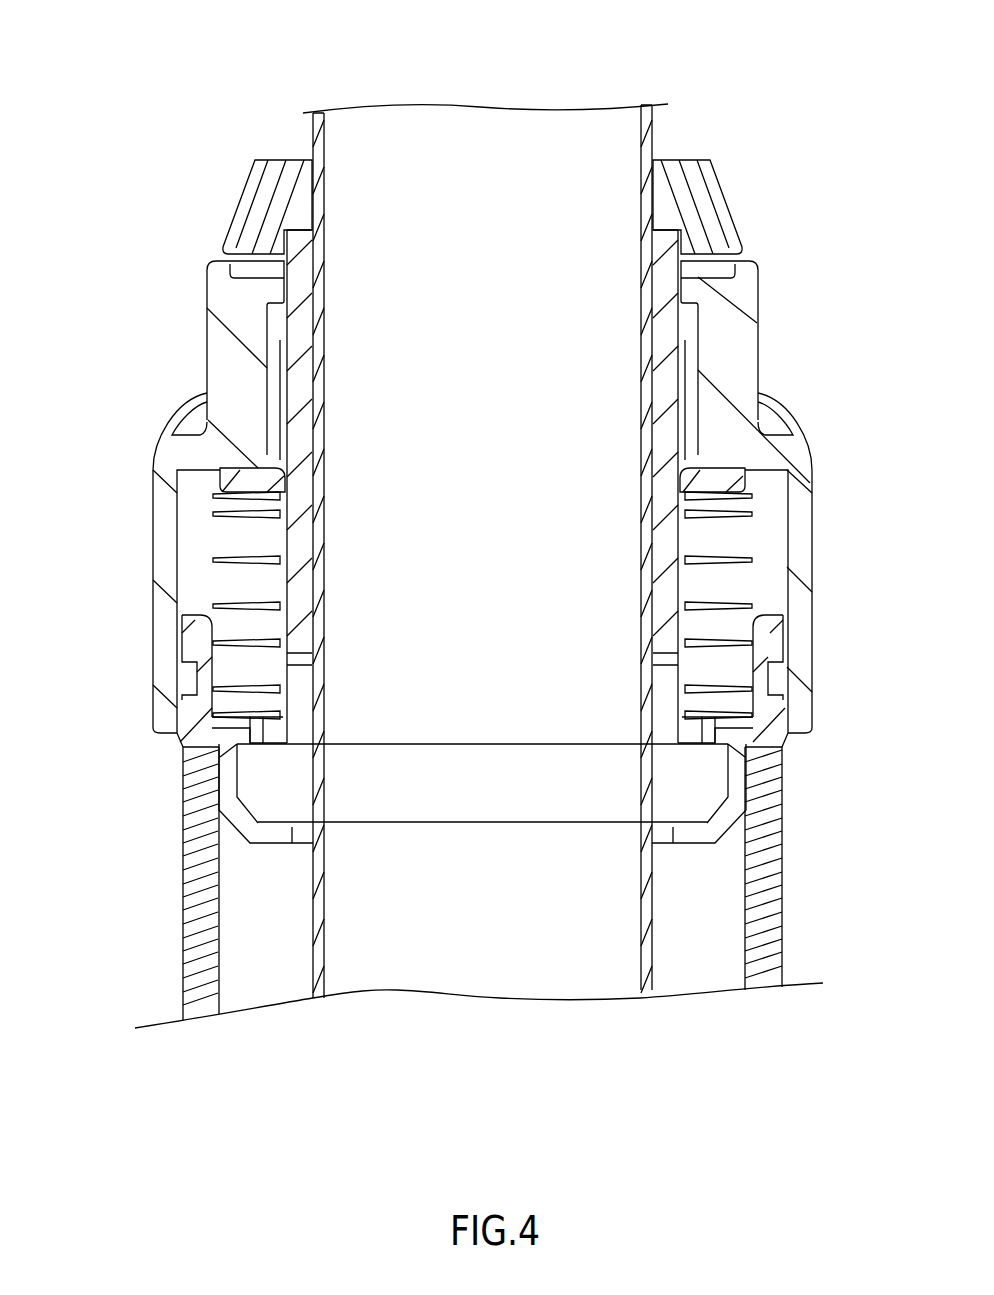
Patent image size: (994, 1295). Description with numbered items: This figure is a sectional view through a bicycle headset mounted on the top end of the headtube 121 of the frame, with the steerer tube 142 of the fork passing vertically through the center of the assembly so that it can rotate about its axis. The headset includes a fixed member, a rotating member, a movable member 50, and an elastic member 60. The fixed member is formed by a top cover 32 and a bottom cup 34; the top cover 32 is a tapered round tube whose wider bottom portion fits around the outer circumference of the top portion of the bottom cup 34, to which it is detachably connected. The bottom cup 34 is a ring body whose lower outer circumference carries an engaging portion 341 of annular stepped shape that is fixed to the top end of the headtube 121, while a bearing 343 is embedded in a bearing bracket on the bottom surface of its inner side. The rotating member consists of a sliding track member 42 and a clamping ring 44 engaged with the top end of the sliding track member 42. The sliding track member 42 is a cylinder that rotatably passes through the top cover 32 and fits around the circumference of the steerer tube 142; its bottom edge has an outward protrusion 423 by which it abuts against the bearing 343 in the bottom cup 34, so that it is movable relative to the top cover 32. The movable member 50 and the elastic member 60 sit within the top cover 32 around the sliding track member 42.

The steerer tube 142 is at (463, 158).
The clamping ring 44 is at (727, 190).
The sliding track member 42 is at (678, 320).
The movable member 50 is at (733, 472).
The elastic member 60 is at (753, 557).
The top cover 32 is at (153, 528).
The bottom cup 34 is at (773, 653).
The protrusion 423 is at (692, 727).
The bearing 343 is at (708, 797).
The engaging portion 341 is at (220, 773).
The headtube 121 is at (782, 873).